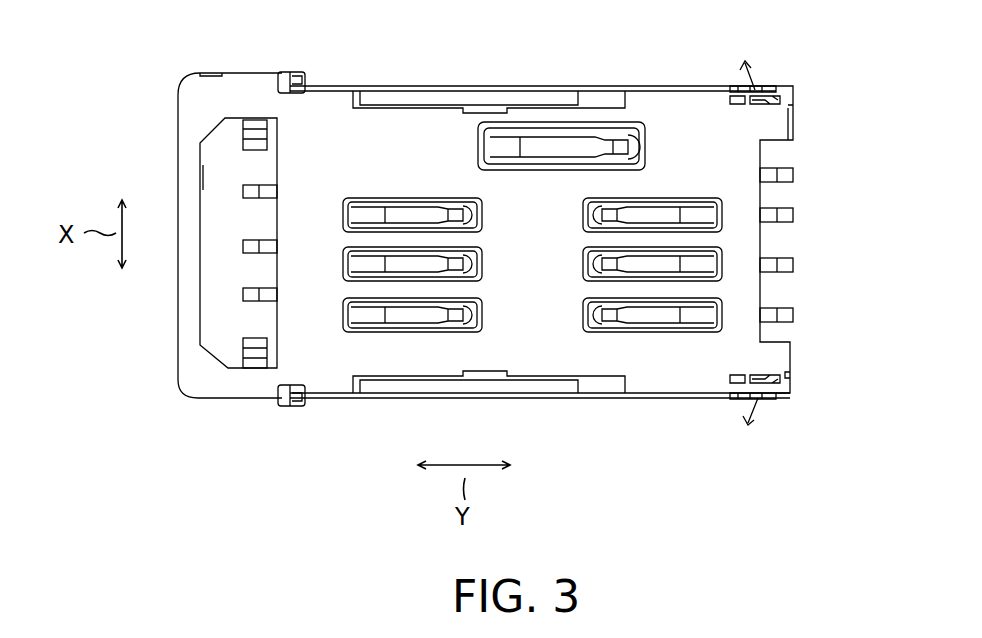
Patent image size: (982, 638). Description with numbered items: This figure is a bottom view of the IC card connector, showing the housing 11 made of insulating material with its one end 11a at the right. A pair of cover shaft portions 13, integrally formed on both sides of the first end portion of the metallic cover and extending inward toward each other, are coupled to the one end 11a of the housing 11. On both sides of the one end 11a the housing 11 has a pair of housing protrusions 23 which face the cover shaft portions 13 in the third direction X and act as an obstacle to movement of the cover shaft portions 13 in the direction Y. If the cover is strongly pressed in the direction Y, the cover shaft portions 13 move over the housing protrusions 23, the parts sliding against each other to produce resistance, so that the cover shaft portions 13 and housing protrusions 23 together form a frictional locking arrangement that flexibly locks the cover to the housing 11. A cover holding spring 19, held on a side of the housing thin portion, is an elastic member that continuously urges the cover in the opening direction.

The housing 11 is at (187, 392).
The one end of the housing 11a is at (793, 376).
The cover shaft portion 13 is at (752, 88).
The cover holding spring 19 is at (548, 148).
The housing protrusion 23 is at (772, 100).